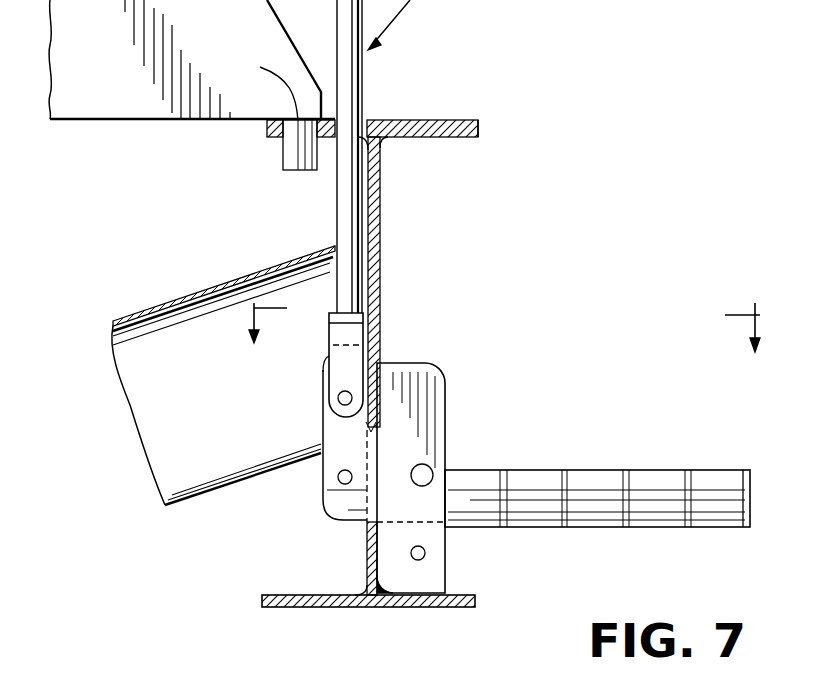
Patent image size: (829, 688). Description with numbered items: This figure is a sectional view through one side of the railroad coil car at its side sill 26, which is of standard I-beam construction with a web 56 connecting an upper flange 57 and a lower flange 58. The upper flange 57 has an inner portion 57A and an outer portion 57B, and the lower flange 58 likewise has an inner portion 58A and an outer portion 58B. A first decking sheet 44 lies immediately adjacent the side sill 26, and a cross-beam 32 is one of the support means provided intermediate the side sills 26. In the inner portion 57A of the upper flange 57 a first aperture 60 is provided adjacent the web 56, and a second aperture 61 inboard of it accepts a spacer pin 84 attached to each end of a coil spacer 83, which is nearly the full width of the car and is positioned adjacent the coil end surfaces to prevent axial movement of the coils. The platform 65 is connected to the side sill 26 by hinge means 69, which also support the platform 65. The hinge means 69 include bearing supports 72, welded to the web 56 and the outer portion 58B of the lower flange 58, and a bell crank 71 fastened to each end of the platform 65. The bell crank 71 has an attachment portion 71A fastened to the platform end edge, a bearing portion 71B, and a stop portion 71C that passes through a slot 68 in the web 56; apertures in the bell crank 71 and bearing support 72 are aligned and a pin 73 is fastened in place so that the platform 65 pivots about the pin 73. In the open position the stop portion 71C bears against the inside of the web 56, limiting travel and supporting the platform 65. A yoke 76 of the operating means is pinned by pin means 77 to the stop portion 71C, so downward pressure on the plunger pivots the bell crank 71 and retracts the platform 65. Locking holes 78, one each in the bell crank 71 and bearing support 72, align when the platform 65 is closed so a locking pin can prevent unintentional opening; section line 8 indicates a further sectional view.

The coil spacer 83 is at (87, 92).
The second aperture 61 is at (267, 86).
The inner portion of upper flange 57A is at (268, 128).
The spacer pin 84 is at (298, 152).
The first aperture 60 is at (352, 117).
The upper flange 57 is at (440, 120).
The outer portion of upper flange 57B is at (478, 130).
The web 56 is at (381, 187).
The side sill 26 is at (386, 252).
The first decking sheet 44 is at (158, 308).
The cross-beam 32 is at (192, 423).
The section line 8- 8 is at (500, 327).
The yoke 76 is at (350, 320).
The pin means 77 is at (338, 398).
The stop portion 71C is at (323, 425).
The bearing portion 71B is at (320, 473).
The locking hole 78 is at (345, 484).
The bearing support 72 is at (423, 375).
The slot 68 is at (377, 433).
The pin 73 is at (432, 465).
The hinge means 69 is at (513, 348).
The bell crank 71 is at (523, 487).
The platform 65 is at (590, 485).
The attachment portion 71A is at (665, 487).
The lower flange 58 is at (278, 607).
The inner portion of lower flange 58A is at (262, 600).
The outer portion of lower flange 58B is at (478, 603).